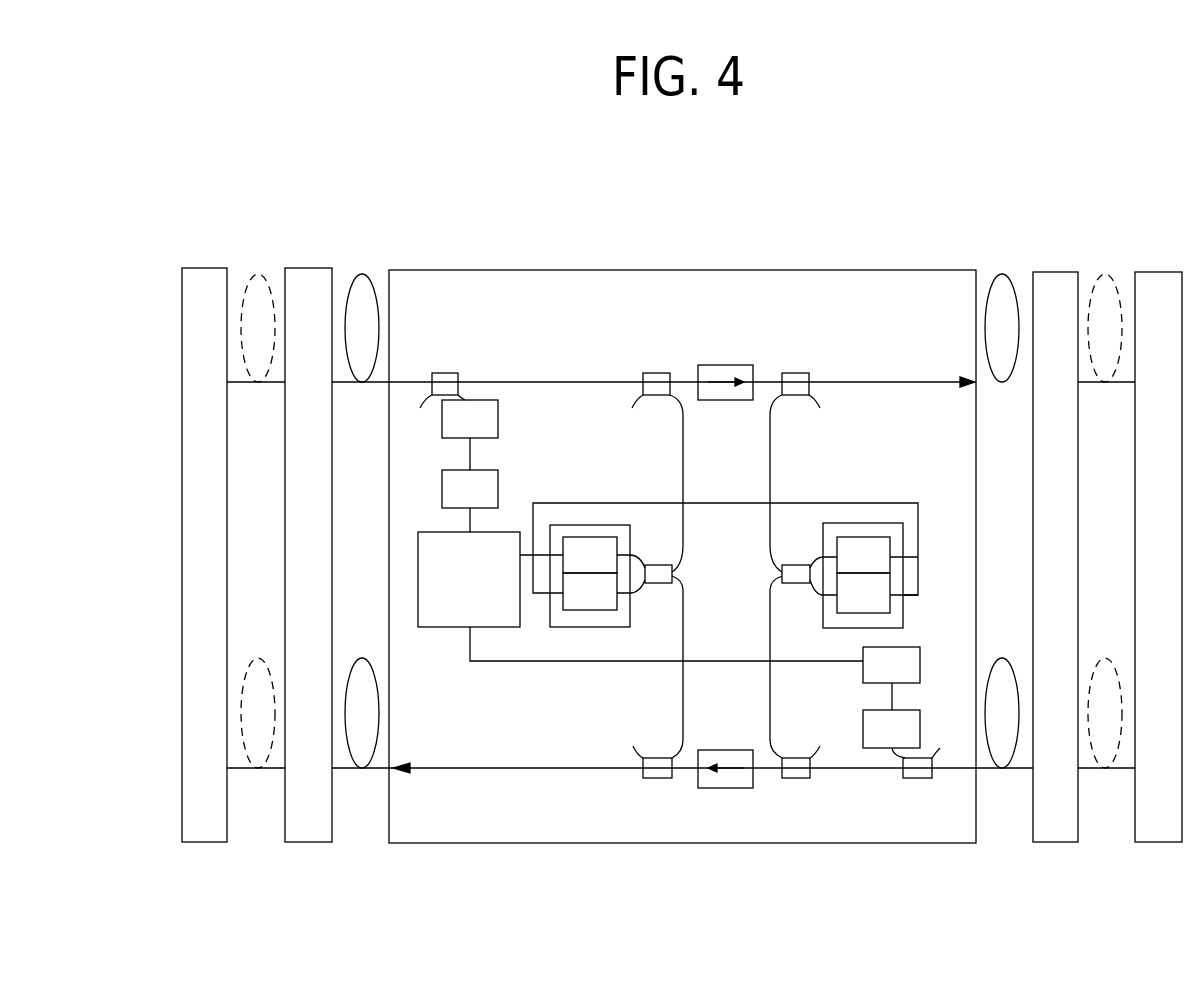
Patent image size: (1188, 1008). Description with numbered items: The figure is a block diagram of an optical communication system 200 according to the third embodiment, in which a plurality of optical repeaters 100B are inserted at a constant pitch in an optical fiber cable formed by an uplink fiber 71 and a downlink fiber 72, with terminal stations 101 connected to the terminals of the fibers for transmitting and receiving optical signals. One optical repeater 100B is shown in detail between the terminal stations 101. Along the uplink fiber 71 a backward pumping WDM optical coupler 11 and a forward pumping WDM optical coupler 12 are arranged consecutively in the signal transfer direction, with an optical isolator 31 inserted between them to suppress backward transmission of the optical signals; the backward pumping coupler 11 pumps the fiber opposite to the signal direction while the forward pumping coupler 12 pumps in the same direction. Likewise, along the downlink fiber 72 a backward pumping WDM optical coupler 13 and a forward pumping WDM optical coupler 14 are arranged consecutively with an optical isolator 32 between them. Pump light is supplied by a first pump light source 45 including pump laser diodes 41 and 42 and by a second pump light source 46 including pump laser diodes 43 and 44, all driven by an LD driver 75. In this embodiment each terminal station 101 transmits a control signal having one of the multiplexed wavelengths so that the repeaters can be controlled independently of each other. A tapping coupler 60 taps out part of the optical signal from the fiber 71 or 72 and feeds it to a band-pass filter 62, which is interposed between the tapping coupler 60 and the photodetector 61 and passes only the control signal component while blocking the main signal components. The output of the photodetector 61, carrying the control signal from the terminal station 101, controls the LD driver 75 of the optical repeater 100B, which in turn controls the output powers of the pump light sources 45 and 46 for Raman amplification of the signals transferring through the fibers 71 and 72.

The terminal station 101 is at (200, 262).
The optical repeater 100B is at (313, 262).
The optical communication system 200 is at (688, 201).
The uplink fiber 71 is at (1002, 386).
The downlink fiber 72 is at (362, 772).
The tapping coupler 60 is at (452, 372).
The photodetector 61 is at (498, 477).
The band-pass filter 62 is at (498, 414).
The LD driver 75 is at (452, 628).
The backward pumping WDM optical coupler 11 is at (660, 372).
The forward pumping WDM optical coupler 12 is at (795, 372).
The backward pumping WDM optical coupler 13 is at (797, 779).
The forward pumping WDM optical coupler 14 is at (655, 779).
The optical isolator 31 is at (733, 365).
The optical isolator 32 is at (728, 789).
The pump laser diode 41 is at (591, 537).
The pump laser diode 42 is at (630, 608).
The pump laser diode 43 is at (858, 523).
The pump laser diode 44 is at (825, 606).
The first pump light source 45 is at (550, 612).
The second pump light source 46 is at (905, 605).